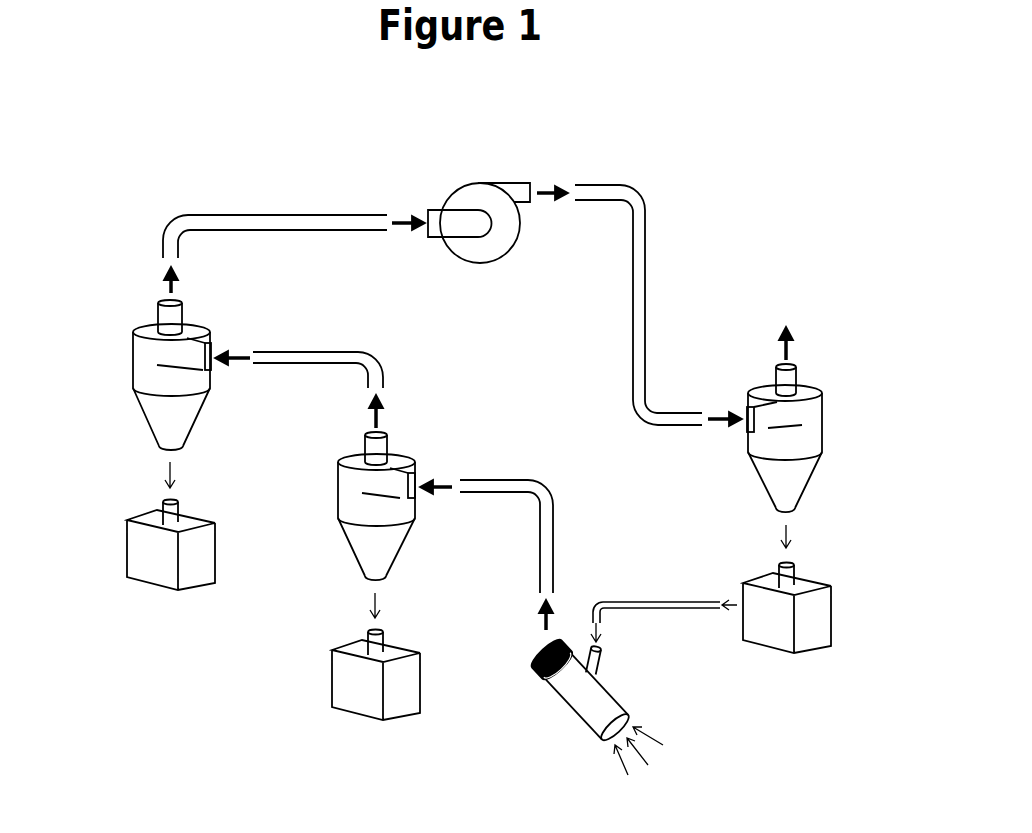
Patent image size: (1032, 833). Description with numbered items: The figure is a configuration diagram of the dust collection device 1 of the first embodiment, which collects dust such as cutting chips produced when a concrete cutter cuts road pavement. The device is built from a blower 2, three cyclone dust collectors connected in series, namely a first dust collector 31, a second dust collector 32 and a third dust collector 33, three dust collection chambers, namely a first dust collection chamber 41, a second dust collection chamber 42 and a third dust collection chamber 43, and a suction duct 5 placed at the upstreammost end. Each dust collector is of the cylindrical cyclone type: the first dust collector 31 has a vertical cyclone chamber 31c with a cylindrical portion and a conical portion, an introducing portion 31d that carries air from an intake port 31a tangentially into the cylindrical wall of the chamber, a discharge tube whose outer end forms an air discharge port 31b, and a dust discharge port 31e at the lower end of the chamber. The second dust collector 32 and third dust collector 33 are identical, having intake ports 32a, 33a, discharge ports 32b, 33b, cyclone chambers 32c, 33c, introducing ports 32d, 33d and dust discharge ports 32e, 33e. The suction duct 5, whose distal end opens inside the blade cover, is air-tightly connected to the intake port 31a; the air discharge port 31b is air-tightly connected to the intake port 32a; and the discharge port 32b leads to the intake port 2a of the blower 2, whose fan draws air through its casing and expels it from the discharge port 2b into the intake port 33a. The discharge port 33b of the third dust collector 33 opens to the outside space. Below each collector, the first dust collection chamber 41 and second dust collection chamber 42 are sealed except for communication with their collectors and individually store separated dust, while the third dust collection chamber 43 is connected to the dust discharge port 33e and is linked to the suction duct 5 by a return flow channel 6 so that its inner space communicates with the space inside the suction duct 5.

The dust collection device 1 is at (737, 177).
The blower 2 is at (455, 185).
The intake port 2a is at (425, 238).
The discharge port 2b is at (533, 186).
The suction duct 5 is at (565, 707).
The return flow channel 6 is at (638, 610).
The first dust collector 31 is at (352, 458).
The intake port 31a is at (413, 473).
The air discharge port 31b is at (378, 430).
The cyclone chamber 31c is at (338, 480).
The introducing portion 31d is at (390, 492).
The dust discharge port 31e is at (370, 580).
The second dust collector 32 is at (147, 325).
The intake port 32a is at (207, 343).
The discharge port 32b is at (173, 296).
The cyclone chamber 32c is at (133, 352).
The introducing port 32d is at (185, 362).
The dust discharge port 32e is at (165, 452).
The third dust collector 33 is at (810, 390).
The intake port 33a is at (745, 407).
The discharge port 33b is at (780, 365).
The cyclone chamber 33c is at (823, 415).
The introducing port 33d is at (772, 430).
The dust discharge port 33e is at (793, 510).
The first dust collection chamber 41 is at (332, 675).
The second dust collection chamber 42 is at (127, 545).
The third dust collection chamber 43 is at (830, 617).